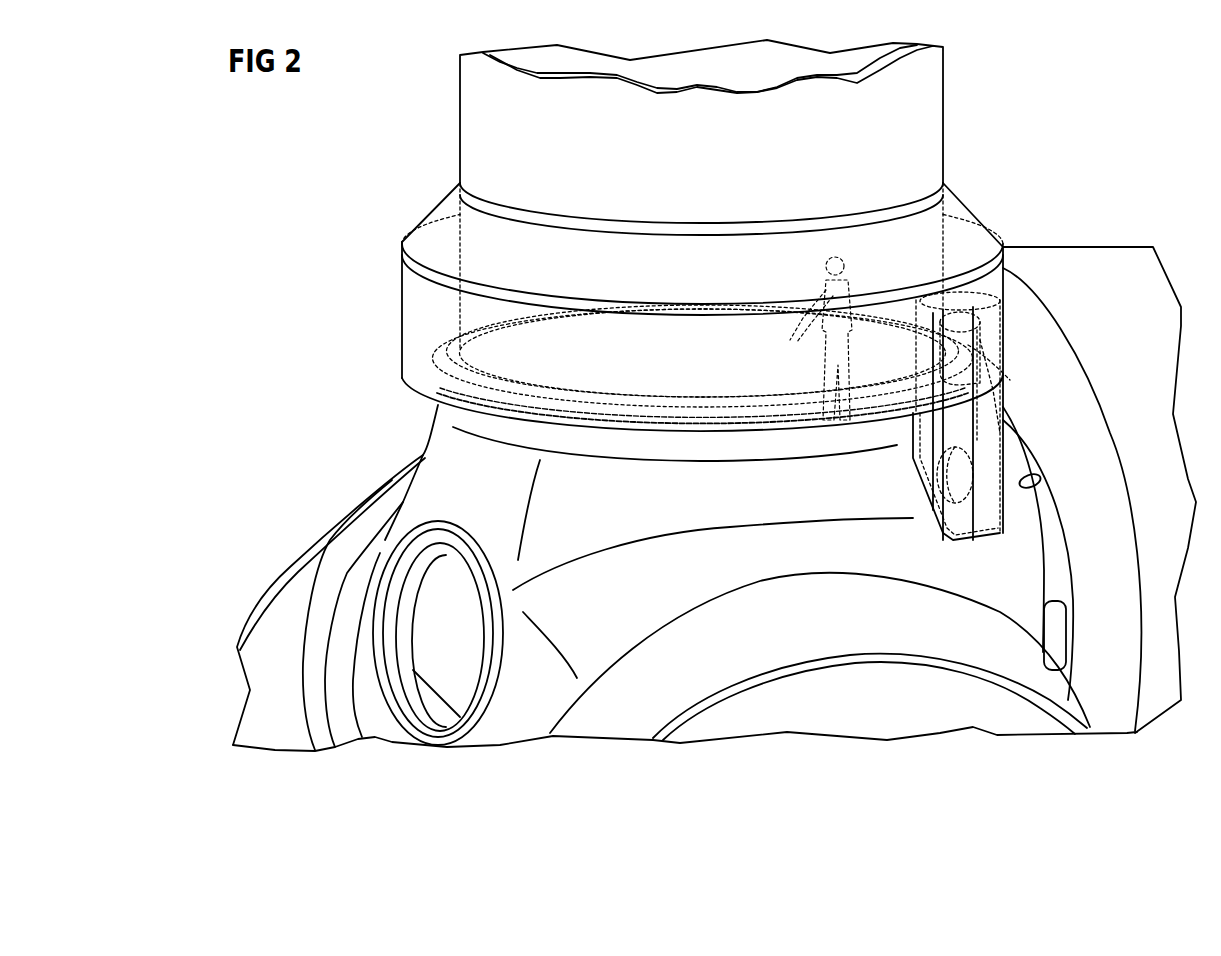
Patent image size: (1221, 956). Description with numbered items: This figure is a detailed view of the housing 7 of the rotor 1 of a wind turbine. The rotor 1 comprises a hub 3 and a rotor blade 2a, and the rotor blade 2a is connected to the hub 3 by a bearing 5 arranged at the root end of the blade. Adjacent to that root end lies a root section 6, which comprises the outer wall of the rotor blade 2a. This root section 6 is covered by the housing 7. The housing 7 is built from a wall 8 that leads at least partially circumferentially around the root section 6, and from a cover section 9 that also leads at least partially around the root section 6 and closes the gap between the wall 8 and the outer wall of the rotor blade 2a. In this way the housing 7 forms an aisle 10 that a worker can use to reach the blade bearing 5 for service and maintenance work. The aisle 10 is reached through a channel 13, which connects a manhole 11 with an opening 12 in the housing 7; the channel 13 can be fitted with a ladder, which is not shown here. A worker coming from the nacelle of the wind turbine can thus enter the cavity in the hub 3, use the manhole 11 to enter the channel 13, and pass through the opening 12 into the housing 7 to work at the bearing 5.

The rotor 1 is at (310, 200).
The rotor blade 2a is at (938, 112).
The hub 3 is at (421, 444).
The bearing 5 is at (455, 347).
The root section 6 is at (470, 318).
The housing 7 is at (384, 213).
The wall 8 is at (402, 283).
The cover section 9 is at (438, 201).
The aisle 10 is at (413, 388).
The manhole 11 is at (947, 488).
The opening 12 is at (970, 322).
The channel 13 is at (1000, 382).